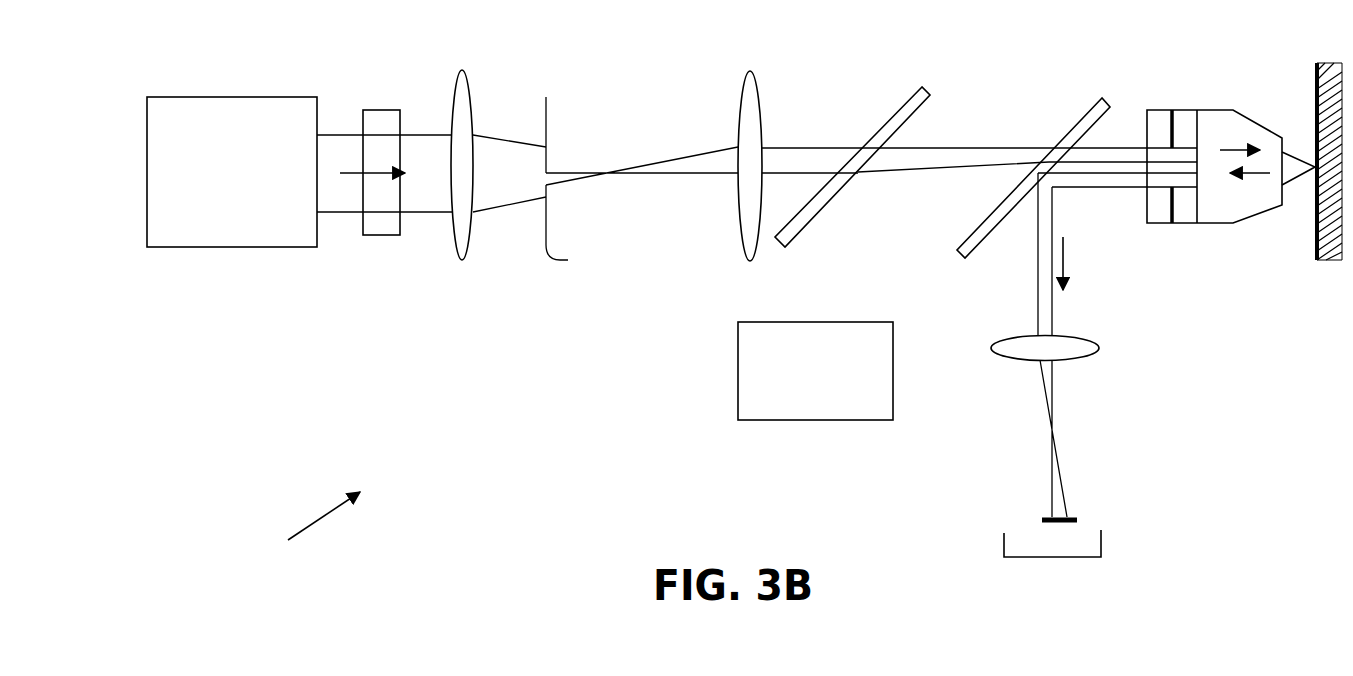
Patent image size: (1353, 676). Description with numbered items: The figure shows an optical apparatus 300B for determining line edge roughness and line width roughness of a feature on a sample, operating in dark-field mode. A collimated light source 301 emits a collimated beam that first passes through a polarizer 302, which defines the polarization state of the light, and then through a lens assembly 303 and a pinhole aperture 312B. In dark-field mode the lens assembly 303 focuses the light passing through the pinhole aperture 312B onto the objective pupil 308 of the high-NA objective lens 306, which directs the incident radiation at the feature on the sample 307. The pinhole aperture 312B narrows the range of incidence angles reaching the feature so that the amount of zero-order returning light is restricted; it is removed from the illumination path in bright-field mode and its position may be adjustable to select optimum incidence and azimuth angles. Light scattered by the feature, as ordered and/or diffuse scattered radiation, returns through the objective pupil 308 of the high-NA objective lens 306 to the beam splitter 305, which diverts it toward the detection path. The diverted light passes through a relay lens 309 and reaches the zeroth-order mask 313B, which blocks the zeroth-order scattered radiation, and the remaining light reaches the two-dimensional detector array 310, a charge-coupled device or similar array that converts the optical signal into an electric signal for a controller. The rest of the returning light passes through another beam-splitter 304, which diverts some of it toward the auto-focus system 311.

The apparatus 300B is at (287, 532).
The collimated light source 301 is at (232, 97).
The polarizer 302 is at (383, 236).
The lens assembly 303 is at (750, 71).
The beam-splitter 304 is at (931, 93).
The beam splitter 305 is at (1109, 105).
The high-NA objective lens 306 is at (1233, 110).
The sample 307 is at (1330, 262).
The objective pupil 308 is at (1172, 223).
The relay lens 309 is at (1098, 348).
The 2D detector array 310 is at (1101, 530).
The auto-focus system 311 is at (820, 420).
The pinhole aperture 312B is at (590, 184).
The 0th-order mask 313B is at (1042, 520).